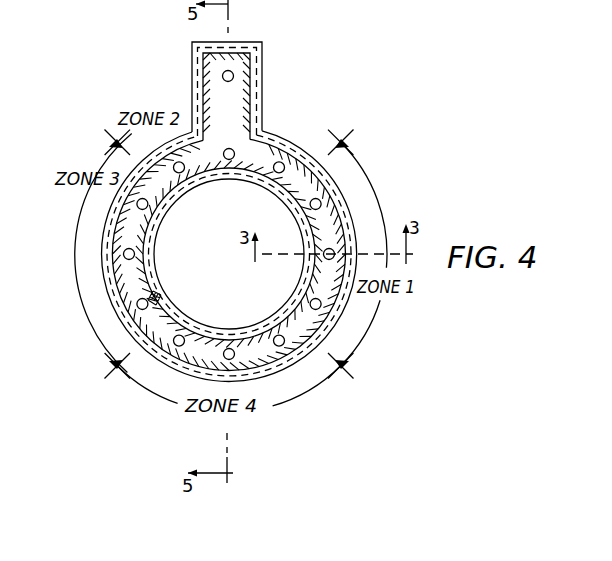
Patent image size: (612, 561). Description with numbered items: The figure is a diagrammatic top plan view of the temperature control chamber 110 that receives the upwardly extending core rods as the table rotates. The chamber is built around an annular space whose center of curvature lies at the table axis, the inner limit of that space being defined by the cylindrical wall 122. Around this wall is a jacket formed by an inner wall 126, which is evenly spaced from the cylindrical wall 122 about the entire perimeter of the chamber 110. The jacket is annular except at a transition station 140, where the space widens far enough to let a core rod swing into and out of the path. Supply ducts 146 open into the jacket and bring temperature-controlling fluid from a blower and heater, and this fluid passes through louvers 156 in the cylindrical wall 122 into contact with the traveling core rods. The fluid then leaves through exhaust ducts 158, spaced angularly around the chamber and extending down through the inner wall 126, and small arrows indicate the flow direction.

The temperature control chamber 110 is at (170, 374).
The cylindrical wall 122 is at (247, 330).
The inner wall 126 is at (237, 334).
The transition station 140 is at (232, 94).
The supply ducts 146 is at (319, 200).
The louvers 156 is at (163, 300).
The exhaust ducts 158 is at (234, 75).